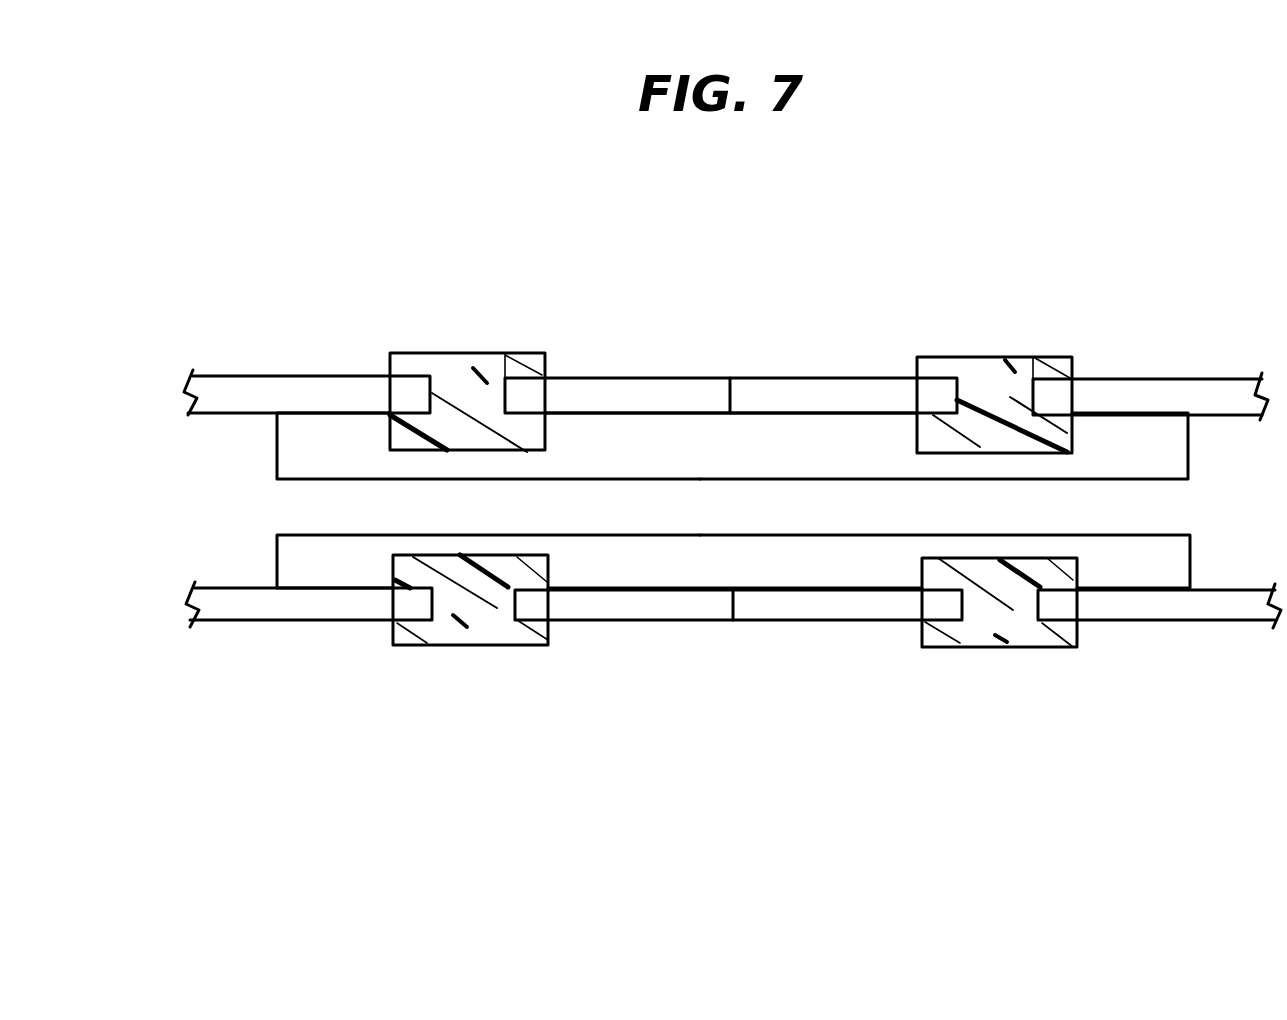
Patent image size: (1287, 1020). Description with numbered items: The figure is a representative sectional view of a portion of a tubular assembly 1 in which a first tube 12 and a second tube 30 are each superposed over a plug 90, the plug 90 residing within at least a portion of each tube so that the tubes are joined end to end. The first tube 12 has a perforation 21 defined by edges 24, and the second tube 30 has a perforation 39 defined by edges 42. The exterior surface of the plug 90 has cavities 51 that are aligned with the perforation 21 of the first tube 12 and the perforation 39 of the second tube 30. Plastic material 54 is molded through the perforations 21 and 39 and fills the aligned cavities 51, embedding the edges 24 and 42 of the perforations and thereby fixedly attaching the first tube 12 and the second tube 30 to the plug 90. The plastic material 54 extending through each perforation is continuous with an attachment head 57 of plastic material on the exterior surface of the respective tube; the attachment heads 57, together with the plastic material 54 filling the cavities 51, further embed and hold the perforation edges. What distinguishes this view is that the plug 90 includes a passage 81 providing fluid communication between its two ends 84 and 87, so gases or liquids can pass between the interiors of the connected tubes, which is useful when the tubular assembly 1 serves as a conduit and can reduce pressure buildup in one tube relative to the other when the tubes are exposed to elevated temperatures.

The tubular assembly 1 is at (568, 815).
The first tube 12 is at (263, 382).
The perforation 21 is at (468, 385).
The edges 24 is at (445, 388).
The second tube 30 is at (788, 387).
The perforation 39 is at (997, 393).
The edges 42 is at (975, 393).
The cavities 51 is at (527, 450).
The plastic material 54 is at (463, 428).
The attachment head 57 is at (545, 355).
The passage 81 is at (798, 519).
The end 84 is at (1190, 448).
The end 87 is at (277, 438).
The plug 90 is at (648, 442).